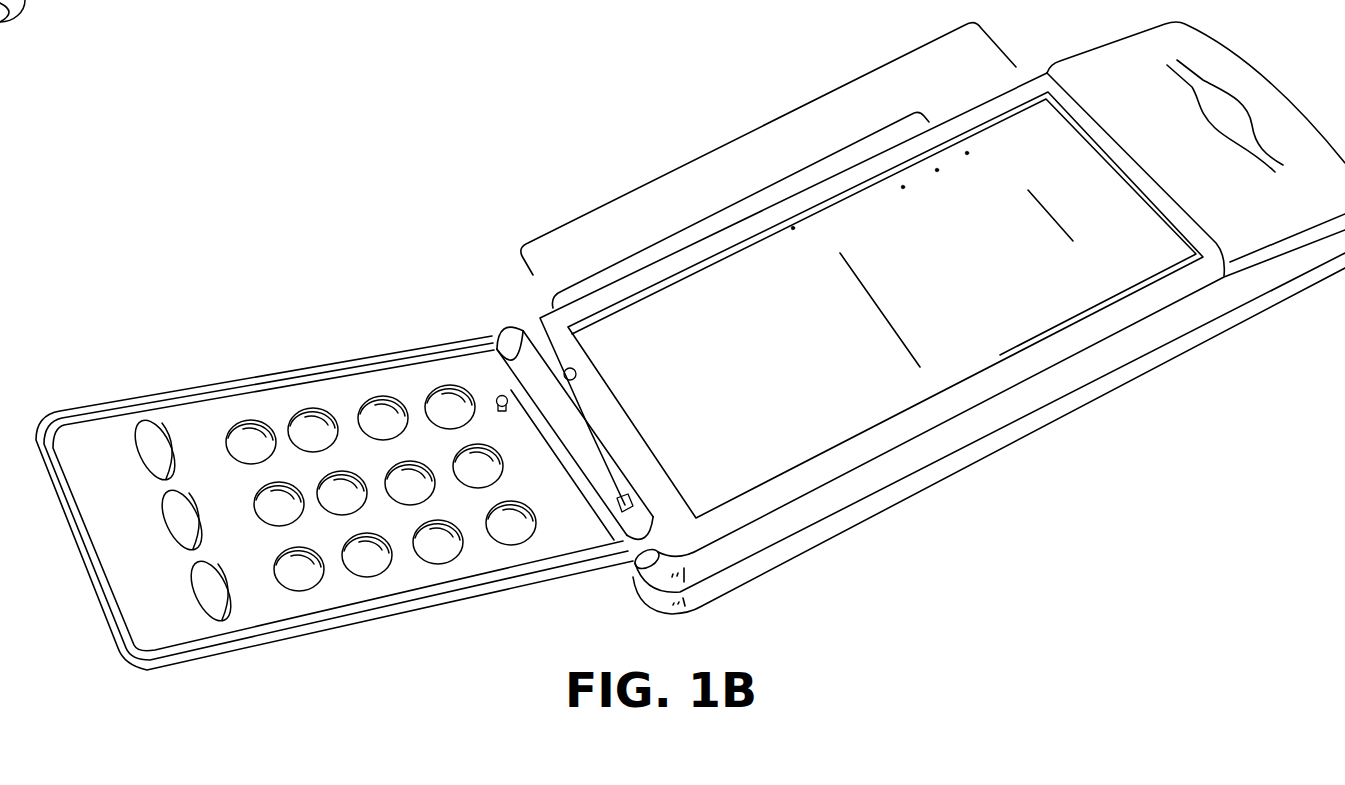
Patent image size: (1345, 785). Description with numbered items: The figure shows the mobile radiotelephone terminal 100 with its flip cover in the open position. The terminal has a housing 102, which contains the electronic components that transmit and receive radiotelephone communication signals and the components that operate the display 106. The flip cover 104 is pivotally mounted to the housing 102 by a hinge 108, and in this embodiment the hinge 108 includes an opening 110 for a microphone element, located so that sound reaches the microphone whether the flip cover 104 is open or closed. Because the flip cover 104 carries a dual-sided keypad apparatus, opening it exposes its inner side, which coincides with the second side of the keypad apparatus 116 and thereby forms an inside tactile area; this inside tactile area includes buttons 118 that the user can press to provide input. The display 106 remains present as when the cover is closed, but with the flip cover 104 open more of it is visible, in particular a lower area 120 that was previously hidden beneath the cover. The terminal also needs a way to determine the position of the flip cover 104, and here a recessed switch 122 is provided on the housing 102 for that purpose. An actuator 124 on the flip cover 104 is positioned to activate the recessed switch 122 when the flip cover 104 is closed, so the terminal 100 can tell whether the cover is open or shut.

The radiotelephone terminal 100 is at (527, 152).
The housing 102 is at (946, 489).
The flip cover 104 is at (399, 632).
The display 106 is at (774, 126).
The hinge 108 is at (542, 378).
The opening 110 is at (634, 497).
The second side of the keypad apparatus 116 is at (358, 385).
The buttons 118 is at (293, 578).
The lower area 120 is at (696, 228).
The recessed switch 122 is at (574, 367).
The actuator 124 is at (500, 396).